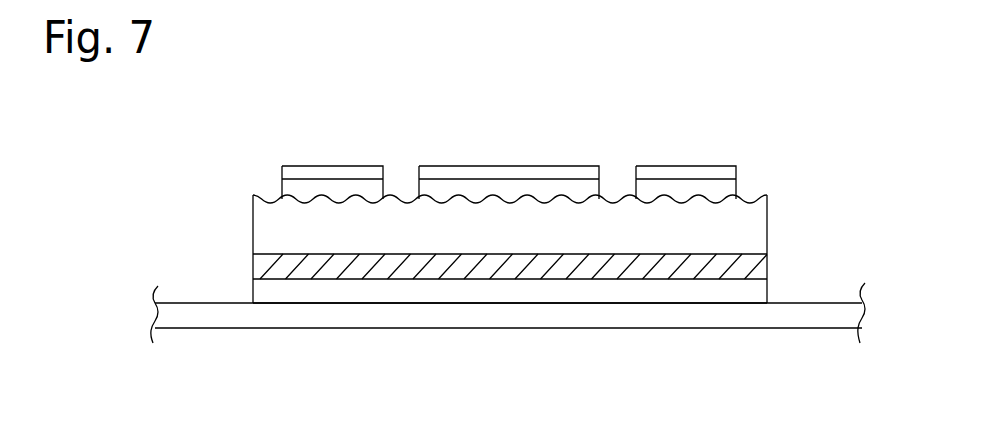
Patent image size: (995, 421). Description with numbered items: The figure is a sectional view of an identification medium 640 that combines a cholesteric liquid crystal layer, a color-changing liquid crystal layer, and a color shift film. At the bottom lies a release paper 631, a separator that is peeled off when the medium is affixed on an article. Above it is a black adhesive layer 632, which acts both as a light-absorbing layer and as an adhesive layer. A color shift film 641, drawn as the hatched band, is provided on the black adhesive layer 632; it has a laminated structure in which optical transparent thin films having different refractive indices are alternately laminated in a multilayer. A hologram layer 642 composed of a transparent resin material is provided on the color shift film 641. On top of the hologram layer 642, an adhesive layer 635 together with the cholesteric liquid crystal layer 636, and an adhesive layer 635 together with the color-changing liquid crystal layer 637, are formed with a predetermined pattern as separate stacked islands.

The release paper 631 is at (613, 317).
The black adhesive layer 632 is at (705, 293).
The adhesive layer 635 is at (308, 188).
The cholesteric liquid crystal layer 636 is at (360, 173).
The color-changing liquid crystal layer 637 is at (482, 175).
The identification medium 640 is at (775, 178).
The color shift film 641 is at (755, 267).
The hologram layer 642 is at (268, 232).